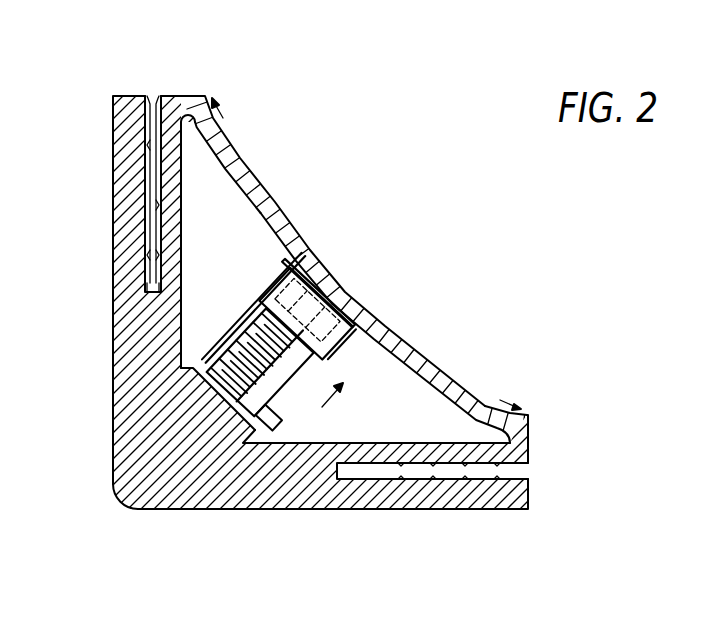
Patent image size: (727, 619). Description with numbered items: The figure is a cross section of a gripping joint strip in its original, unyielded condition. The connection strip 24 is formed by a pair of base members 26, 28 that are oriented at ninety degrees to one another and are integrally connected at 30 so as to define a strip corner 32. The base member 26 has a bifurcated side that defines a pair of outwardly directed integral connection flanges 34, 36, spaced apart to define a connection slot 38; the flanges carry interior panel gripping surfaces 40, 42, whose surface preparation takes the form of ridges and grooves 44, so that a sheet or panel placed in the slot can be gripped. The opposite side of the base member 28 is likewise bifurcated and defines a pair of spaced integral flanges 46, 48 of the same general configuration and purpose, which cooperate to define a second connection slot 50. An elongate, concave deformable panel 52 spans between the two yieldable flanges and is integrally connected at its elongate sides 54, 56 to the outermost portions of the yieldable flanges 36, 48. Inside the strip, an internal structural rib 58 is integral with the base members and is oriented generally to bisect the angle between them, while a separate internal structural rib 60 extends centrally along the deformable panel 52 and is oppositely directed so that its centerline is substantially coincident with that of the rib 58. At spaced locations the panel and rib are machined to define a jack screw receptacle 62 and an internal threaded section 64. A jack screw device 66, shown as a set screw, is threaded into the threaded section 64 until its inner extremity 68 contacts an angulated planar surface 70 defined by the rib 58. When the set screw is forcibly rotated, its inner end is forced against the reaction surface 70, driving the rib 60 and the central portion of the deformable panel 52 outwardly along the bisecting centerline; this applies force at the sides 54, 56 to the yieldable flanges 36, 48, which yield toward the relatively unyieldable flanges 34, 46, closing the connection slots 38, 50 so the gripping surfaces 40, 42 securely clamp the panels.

The connection strip 24 is at (117, 70).
The base member 26 is at (120, 370).
The base member 28 is at (320, 472).
The integral connection 30 is at (150, 478).
The strip corner 32 is at (122, 503).
The connection flange 34 is at (113, 178).
The connection flange 36 is at (160, 205).
The connection slot 38 is at (153, 143).
The panel gripping surface 40 is at (162, 292).
The panel gripping surface 42 is at (160, 257).
The ridges and grooves 44 is at (151, 118).
The flange 46 is at (415, 497).
The flange 48 is at (477, 450).
The connection slot 50 is at (512, 470).
The deformable panel 52 is at (243, 170).
The elongate side 54 is at (199, 93).
The elongate side 56 is at (528, 433).
The internal structural rib 58 is at (228, 420).
The internal structural rib 60 is at (243, 278).
The jack screw receptacle 62 is at (365, 310).
The internal threaded section 64 is at (297, 420).
The jack screw device 66 is at (312, 273).
The inner extremity 68 is at (210, 385).
The angulated planar surface 70 is at (200, 370).